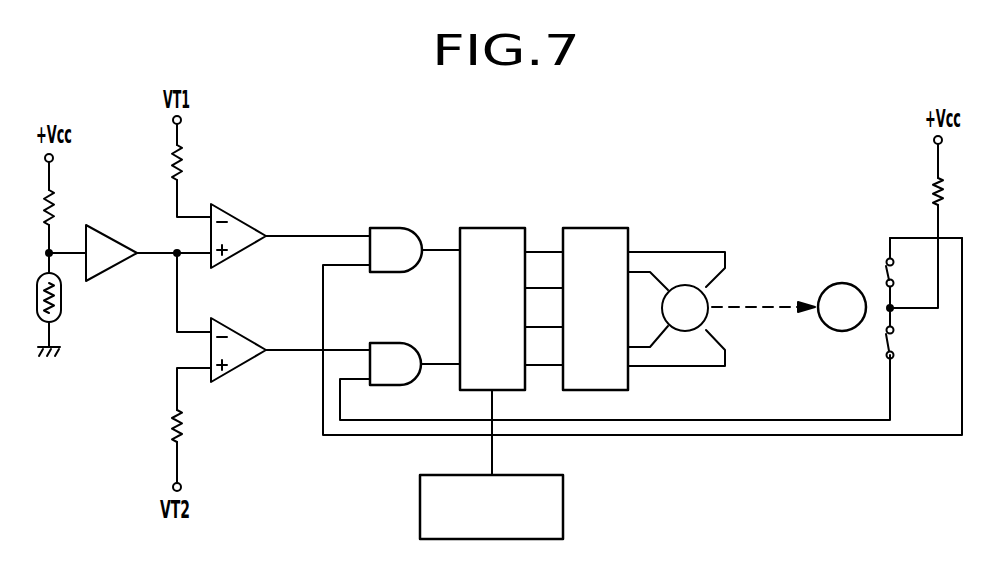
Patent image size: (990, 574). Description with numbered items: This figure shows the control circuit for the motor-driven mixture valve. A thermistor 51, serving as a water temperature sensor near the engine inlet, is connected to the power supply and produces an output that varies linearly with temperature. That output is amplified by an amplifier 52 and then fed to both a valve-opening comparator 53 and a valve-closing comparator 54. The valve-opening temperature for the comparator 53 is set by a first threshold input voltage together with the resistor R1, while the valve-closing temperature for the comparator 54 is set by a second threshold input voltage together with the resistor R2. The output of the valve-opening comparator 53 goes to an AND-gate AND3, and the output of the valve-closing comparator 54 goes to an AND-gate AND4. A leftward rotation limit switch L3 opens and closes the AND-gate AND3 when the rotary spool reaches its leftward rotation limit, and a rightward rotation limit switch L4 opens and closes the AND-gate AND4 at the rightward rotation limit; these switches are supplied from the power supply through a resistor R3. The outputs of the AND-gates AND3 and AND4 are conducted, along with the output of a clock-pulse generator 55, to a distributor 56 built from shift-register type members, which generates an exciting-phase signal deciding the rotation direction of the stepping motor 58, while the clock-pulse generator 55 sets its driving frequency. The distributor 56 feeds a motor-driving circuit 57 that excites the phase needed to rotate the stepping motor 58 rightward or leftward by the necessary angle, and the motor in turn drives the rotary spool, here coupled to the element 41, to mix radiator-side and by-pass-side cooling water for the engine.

The lamp 41 is at (846, 283).
The thermistor 51 is at (62, 298).
The amplifier 52 is at (110, 234).
The valve-opening comparator 53 is at (252, 220).
The valve-closing comparator 54 is at (244, 332).
The clock-pulse generator 55 is at (540, 474).
The distributor 56 is at (506, 227).
The motor-driving circuit 57 is at (615, 227).
The stepping motor 58 is at (712, 298).
The resistor R1 is at (185, 163).
The resistor R2 is at (185, 425).
The resistor R3 is at (930, 188).
The leftward rotation limit switch L3 is at (896, 272).
The rightward rotation limit switch L4 is at (896, 342).
The AND-gate AND3 is at (389, 227).
The AND-gate AND4 is at (387, 342).